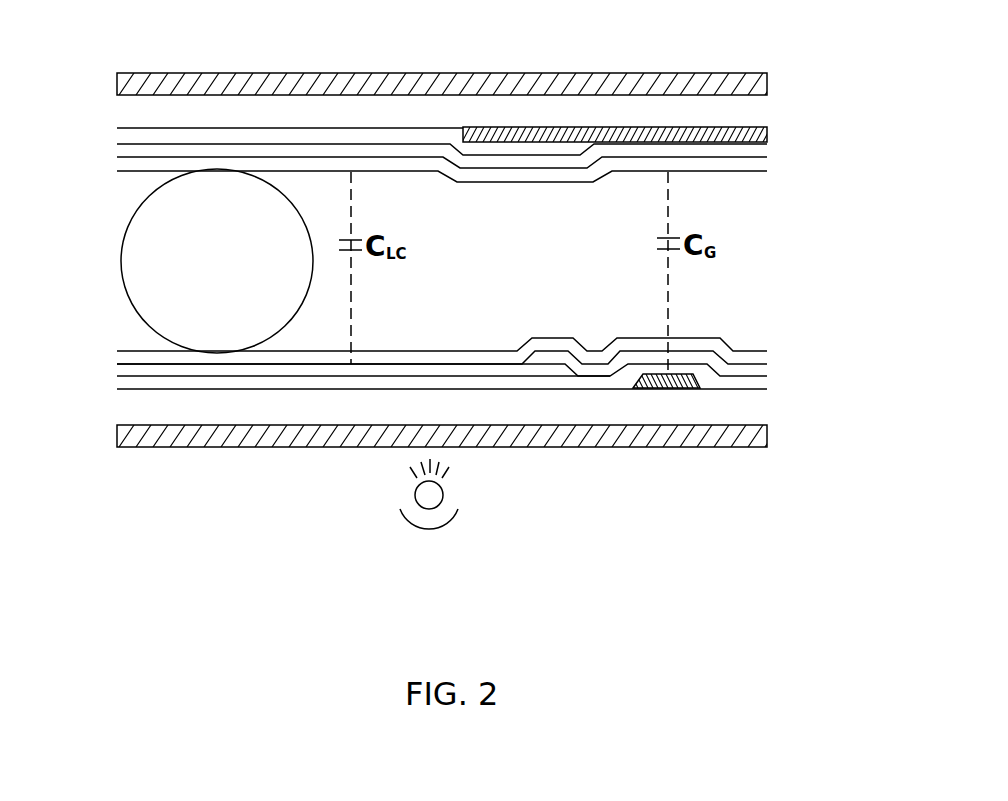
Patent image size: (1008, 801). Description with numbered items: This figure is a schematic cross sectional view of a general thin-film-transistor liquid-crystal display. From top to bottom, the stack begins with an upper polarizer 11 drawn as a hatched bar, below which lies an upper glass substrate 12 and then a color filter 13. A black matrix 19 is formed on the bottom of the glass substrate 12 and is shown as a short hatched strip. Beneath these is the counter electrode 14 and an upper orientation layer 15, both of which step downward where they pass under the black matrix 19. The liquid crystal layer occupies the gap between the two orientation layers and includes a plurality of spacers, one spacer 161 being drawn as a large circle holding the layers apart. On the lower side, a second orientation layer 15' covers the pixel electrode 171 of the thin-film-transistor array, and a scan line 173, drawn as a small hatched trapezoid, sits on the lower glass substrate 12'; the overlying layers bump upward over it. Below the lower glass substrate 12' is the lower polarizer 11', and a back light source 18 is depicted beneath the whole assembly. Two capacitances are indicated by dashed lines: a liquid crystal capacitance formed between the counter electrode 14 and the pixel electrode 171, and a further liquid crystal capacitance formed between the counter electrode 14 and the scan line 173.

The polarizer 11 is at (467, 79).
The glass substrate 12 is at (475, 111).
The color filter 13 is at (256, 132).
The black matrix 19 is at (768, 133).
The counter electrode 14 is at (767, 148).
The orientation layer 15 is at (475, 177).
The spacer 161 is at (125, 240).
The pixel electrode 171 is at (126, 373).
The orientation layer 15' is at (442, 325).
The scan line 173 is at (694, 373).
The glass substrate 12' is at (481, 401).
The polarizer 11' is at (473, 436).
The back light source 18 is at (452, 492).